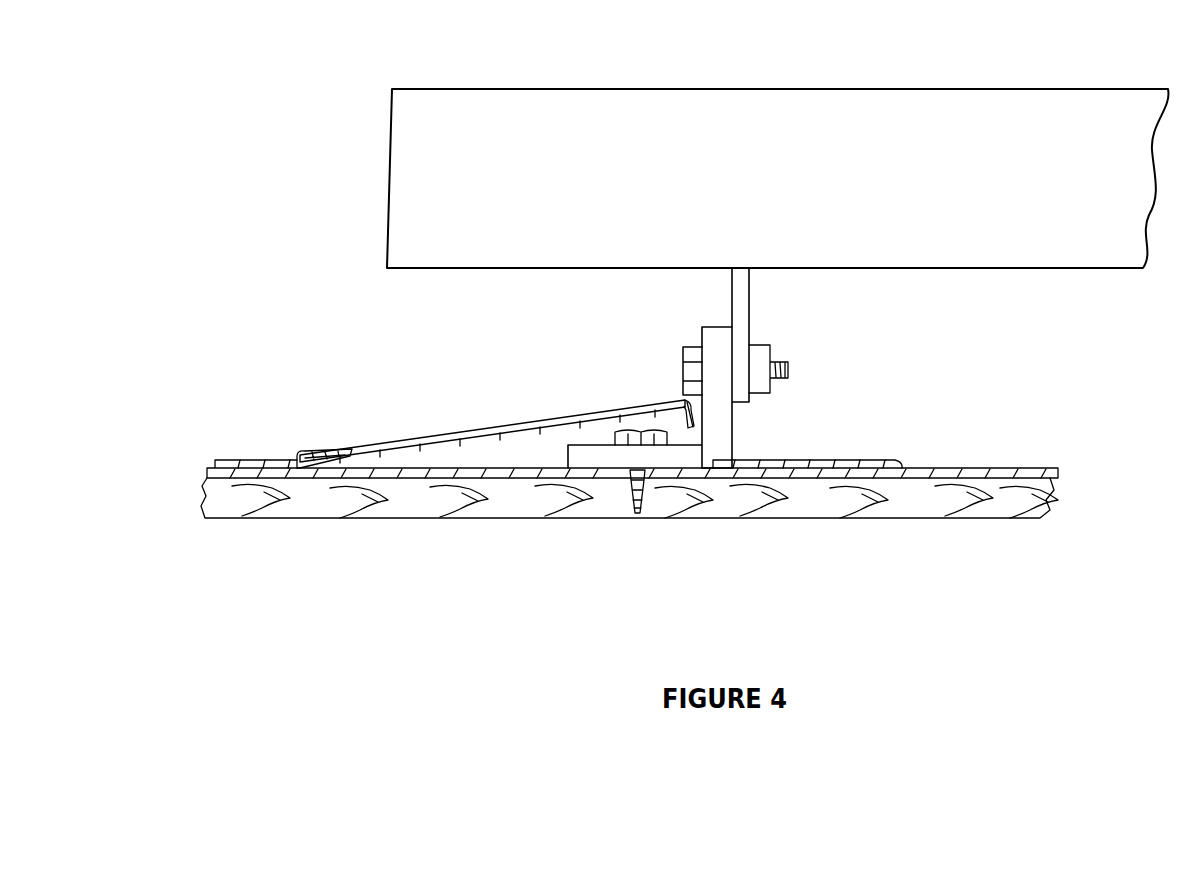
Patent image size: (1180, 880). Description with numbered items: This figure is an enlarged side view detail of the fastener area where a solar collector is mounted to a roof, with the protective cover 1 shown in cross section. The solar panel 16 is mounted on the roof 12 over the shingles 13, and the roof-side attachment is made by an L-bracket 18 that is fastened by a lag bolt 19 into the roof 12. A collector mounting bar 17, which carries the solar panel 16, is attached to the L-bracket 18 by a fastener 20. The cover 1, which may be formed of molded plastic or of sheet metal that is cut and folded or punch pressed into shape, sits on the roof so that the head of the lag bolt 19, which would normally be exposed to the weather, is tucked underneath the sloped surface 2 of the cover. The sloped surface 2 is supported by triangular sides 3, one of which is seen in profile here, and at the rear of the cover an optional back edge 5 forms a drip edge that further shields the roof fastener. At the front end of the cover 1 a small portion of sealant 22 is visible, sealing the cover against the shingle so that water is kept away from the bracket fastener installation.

The protective cover 1 is at (580, 362).
The sloped surface 2 is at (548, 422).
The triangular sides 3 is at (513, 452).
The back edge 5 is at (687, 400).
The roof 12 is at (1048, 516).
The shingles 13 is at (877, 453).
The solar panel 16 is at (988, 82).
The collector mounting bar 17 is at (742, 298).
The L-bracket 18 is at (717, 438).
The lag bolt 19 is at (648, 490).
The fastener 20 is at (780, 355).
The sealant 22 is at (338, 445).